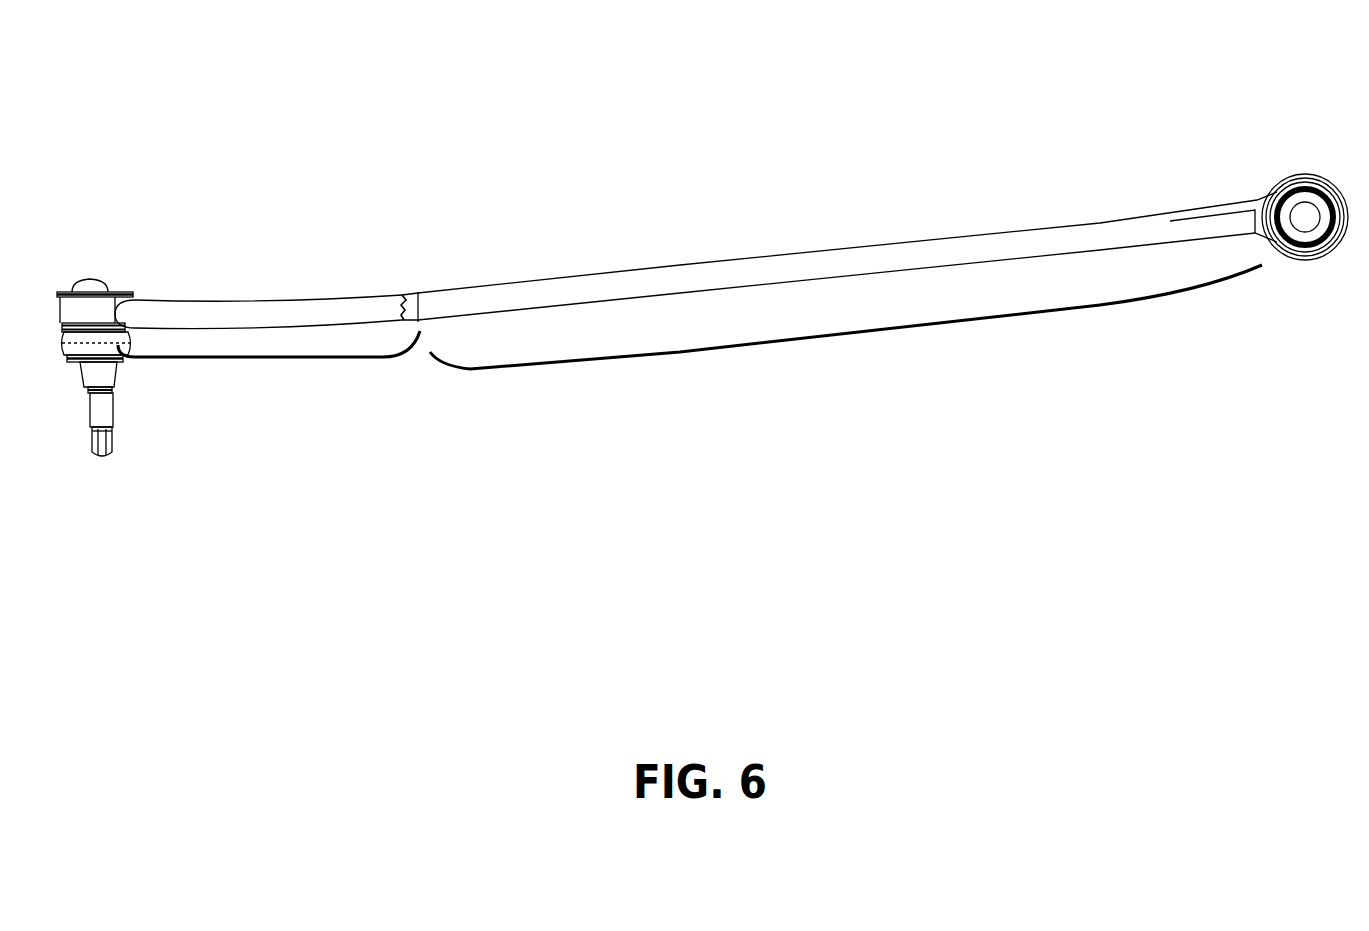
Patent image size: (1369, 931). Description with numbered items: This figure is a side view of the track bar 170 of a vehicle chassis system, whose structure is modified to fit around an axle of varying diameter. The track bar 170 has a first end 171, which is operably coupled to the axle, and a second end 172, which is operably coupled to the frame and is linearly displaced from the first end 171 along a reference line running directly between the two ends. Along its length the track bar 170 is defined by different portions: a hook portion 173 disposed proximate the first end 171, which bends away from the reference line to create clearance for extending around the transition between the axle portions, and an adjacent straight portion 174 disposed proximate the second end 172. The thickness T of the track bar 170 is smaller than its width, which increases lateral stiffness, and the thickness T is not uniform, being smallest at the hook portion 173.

The track bar 170 is at (203, 95).
The first end 171 is at (95, 308).
The second end 172 is at (1298, 253).
The hook portion 173 is at (267, 359).
The straight portion 174 is at (772, 342).
The thickness T is at (412, 295).